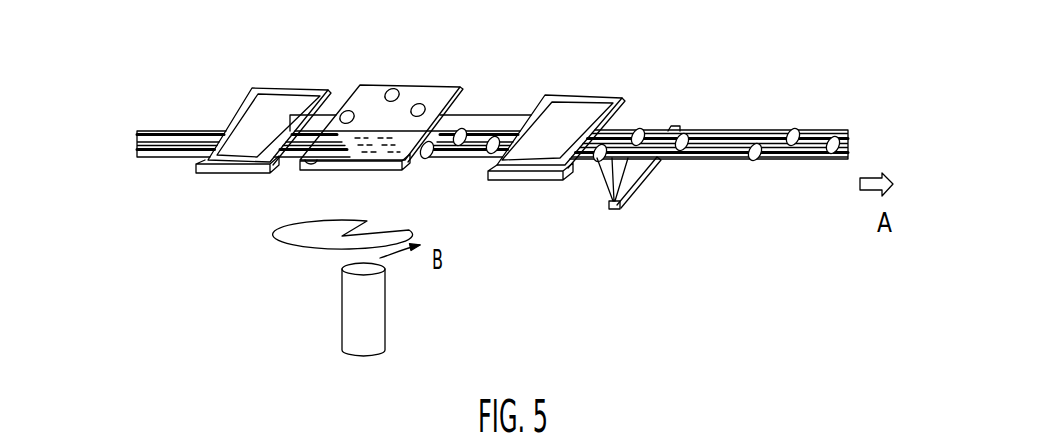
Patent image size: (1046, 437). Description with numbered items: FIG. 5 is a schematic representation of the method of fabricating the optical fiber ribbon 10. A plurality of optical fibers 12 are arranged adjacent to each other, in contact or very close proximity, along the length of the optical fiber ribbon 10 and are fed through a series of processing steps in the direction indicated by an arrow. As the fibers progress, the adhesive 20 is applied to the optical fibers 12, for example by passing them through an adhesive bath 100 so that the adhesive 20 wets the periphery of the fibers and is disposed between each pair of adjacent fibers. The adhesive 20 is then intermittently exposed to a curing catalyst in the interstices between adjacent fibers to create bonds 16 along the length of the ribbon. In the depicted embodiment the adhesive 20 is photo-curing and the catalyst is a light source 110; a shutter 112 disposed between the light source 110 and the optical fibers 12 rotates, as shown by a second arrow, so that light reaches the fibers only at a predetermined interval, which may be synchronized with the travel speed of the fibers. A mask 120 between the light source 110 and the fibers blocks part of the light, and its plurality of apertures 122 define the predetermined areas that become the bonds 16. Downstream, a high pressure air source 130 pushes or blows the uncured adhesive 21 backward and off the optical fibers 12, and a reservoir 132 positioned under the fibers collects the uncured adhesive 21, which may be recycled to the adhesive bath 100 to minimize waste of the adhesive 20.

The optical fiber ribbon 10 is at (758, 108).
The optical fibers 12 is at (150, 133).
The bonds 16 is at (500, 136).
The adhesive 20 is at (235, 142).
The uncured adhesive 21 is at (478, 118).
The adhesive bath 100 is at (249, 115).
The light source 110 is at (385, 310).
The shutter 112 is at (298, 249).
The mask 120 is at (381, 91).
The apertures 122 is at (393, 87).
The high pressure air source 130 is at (618, 210).
The reservoir 132 is at (513, 182).